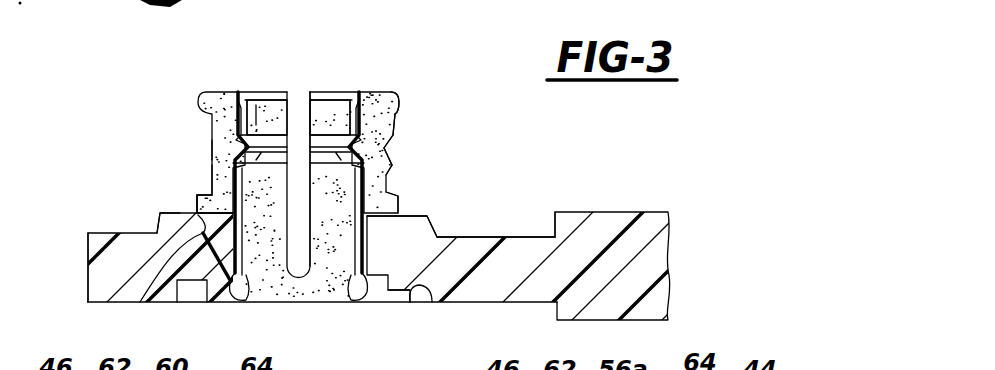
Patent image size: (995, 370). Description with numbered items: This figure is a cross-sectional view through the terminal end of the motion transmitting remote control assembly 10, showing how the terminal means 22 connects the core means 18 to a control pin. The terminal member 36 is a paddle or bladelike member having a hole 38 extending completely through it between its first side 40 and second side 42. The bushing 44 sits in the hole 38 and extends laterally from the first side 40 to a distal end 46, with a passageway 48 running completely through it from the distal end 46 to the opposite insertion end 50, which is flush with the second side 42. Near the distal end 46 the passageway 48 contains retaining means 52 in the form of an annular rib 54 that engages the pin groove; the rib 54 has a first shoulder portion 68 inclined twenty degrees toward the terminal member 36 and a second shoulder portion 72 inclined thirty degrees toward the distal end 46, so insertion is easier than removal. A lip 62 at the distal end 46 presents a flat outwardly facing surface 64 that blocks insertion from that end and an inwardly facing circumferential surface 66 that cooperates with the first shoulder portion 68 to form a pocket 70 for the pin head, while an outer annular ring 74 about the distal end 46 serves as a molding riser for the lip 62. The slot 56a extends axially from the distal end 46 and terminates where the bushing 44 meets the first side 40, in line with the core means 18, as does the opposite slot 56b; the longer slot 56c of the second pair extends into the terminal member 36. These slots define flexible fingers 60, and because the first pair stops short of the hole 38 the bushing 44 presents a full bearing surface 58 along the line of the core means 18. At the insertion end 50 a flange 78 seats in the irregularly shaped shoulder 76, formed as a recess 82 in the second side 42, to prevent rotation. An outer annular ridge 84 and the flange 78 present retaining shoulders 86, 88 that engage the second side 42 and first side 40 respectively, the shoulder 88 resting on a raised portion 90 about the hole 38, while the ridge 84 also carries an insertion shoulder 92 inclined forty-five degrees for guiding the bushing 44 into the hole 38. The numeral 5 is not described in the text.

The arrow of adjacent figure 5 is at (161, 16).
The motion transmitting remote control assembly 10 is at (473, 196).
The core means 18 is at (648, 212).
The terminal means 22 is at (527, 237).
The terminal member 36 is at (556, 212).
The hole 38 is at (141, 303).
The first side 40 is at (101, 232).
The second side 42 is at (97, 305).
The bushing 44 is at (402, 95).
The distal end 46 is at (270, 90).
The passageway 48 is at (303, 297).
The insertion end 50 is at (212, 303).
The retaining means 52 is at (275, 166).
The annular rib 54 is at (232, 150).
The slot 56a is at (222, 117).
The slot 56b is at (393, 132).
The slot 56c is at (304, 108).
The full bearing surface 58 is at (237, 303).
The flexible fingers 60 is at (213, 135).
The lip 62 is at (338, 90).
The flat outwardly facing surface 64 is at (218, 91).
The inwardly facing circumferential surface 66 is at (253, 91).
The first shoulder portion 68 is at (387, 141).
The pocket 70 is at (359, 90).
The second shoulder portion 72 is at (386, 160).
The outer annular ring 74 is at (398, 103).
The irregularly shaped shoulder 76 is at (400, 305).
The flange 78 is at (423, 312).
The recess 82 is at (186, 303).
The outer annular ridge 84 is at (197, 206).
The retaining shoulder 86 is at (170, 303).
The retaining shoulder 88 is at (176, 217).
The raised portion 90 is at (408, 220).
The insertion shoulder 92 is at (214, 172).